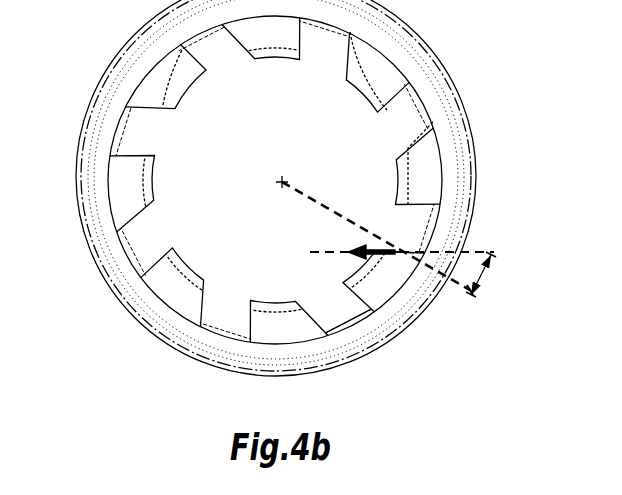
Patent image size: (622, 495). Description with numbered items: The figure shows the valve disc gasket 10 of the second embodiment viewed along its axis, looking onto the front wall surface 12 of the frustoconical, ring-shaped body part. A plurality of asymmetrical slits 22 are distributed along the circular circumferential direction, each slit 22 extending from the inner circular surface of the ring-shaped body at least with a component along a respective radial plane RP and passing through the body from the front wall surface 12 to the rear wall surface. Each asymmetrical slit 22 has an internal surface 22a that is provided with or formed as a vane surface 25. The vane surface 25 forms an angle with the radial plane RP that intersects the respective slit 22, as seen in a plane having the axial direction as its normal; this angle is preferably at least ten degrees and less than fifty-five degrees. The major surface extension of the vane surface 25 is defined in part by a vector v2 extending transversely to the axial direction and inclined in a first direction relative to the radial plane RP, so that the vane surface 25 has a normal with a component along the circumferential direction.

The valve disc gasket 10 is at (145, 353).
The front wall surface 12 is at (125, 178).
The asymmetrical slit 22 is at (323, 301).
The internal surface 22a is at (401, 249).
The vane surface 25 is at (401, 249).
The axis A is at (277, 180).
The radial plane RP is at (322, 208).
The vector v2 is at (402, 243).